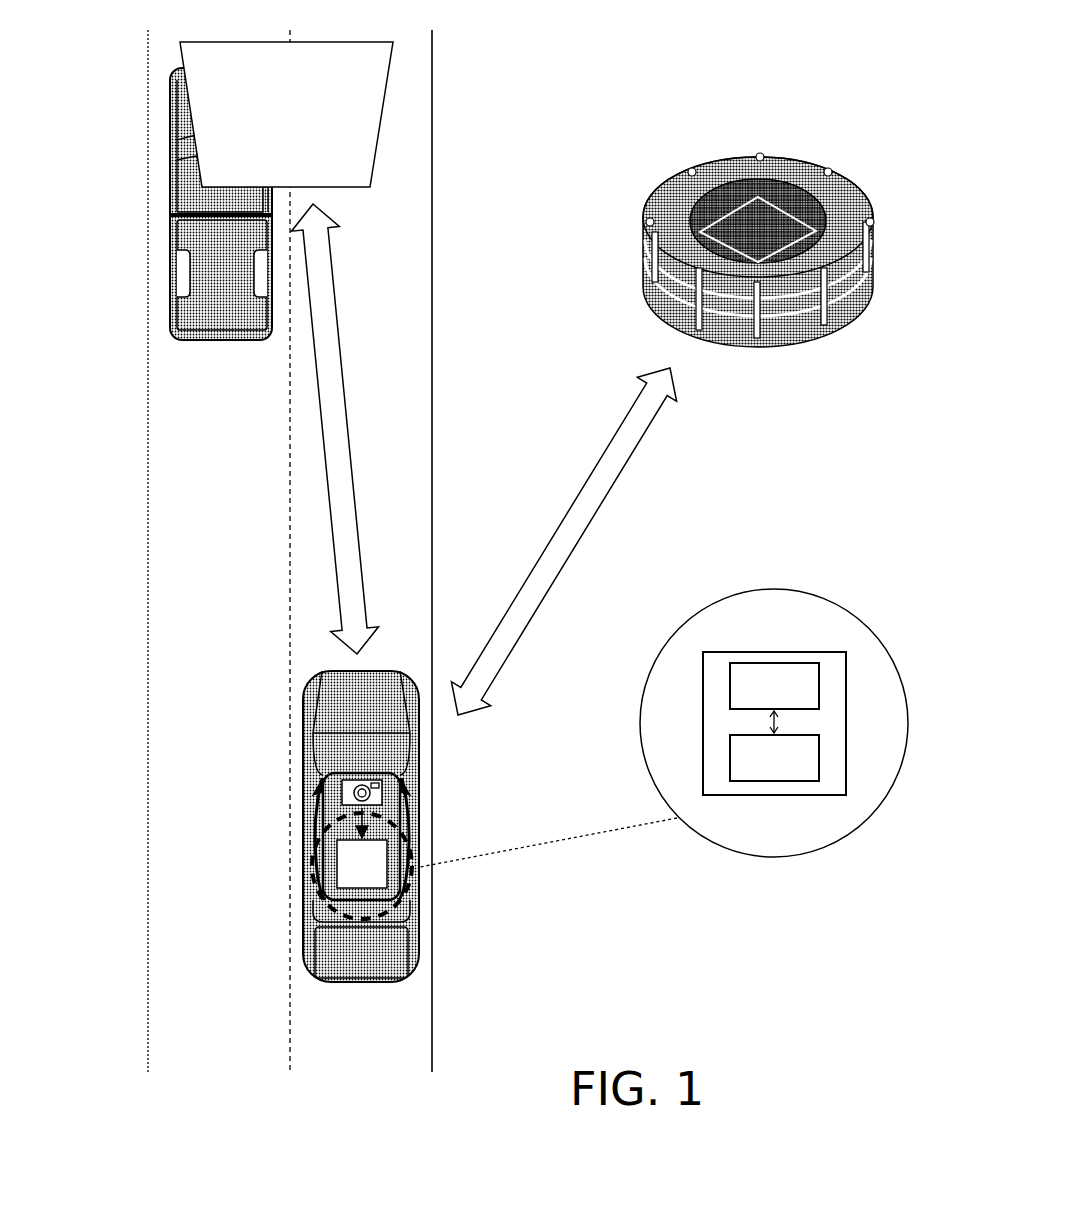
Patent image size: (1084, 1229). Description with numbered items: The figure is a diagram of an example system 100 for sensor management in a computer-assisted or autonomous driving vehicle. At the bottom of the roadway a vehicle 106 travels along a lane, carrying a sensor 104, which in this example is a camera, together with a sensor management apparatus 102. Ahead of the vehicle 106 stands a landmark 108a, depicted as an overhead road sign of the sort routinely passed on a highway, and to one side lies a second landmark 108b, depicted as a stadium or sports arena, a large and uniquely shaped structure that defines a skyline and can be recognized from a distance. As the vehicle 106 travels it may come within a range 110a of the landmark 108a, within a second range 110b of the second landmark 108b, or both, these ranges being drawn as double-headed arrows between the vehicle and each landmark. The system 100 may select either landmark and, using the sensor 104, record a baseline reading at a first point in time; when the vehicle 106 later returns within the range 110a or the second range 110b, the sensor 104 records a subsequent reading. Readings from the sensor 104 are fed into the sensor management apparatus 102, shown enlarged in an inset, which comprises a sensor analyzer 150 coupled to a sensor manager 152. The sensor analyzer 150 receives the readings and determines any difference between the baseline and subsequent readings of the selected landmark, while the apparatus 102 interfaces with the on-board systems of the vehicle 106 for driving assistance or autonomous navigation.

The system 100 is at (850, 944).
The sensor management apparatus 102 is at (337, 866).
The sensor 104 is at (383, 792).
The vehicle 106 is at (367, 962).
The landmark 108a is at (385, 113).
The second landmark 108b is at (842, 147).
The range 110a is at (336, 409).
The second range 110b is at (603, 478).
The sensor analyzer 150 is at (774, 686).
The sensor manager 152 is at (774, 758).